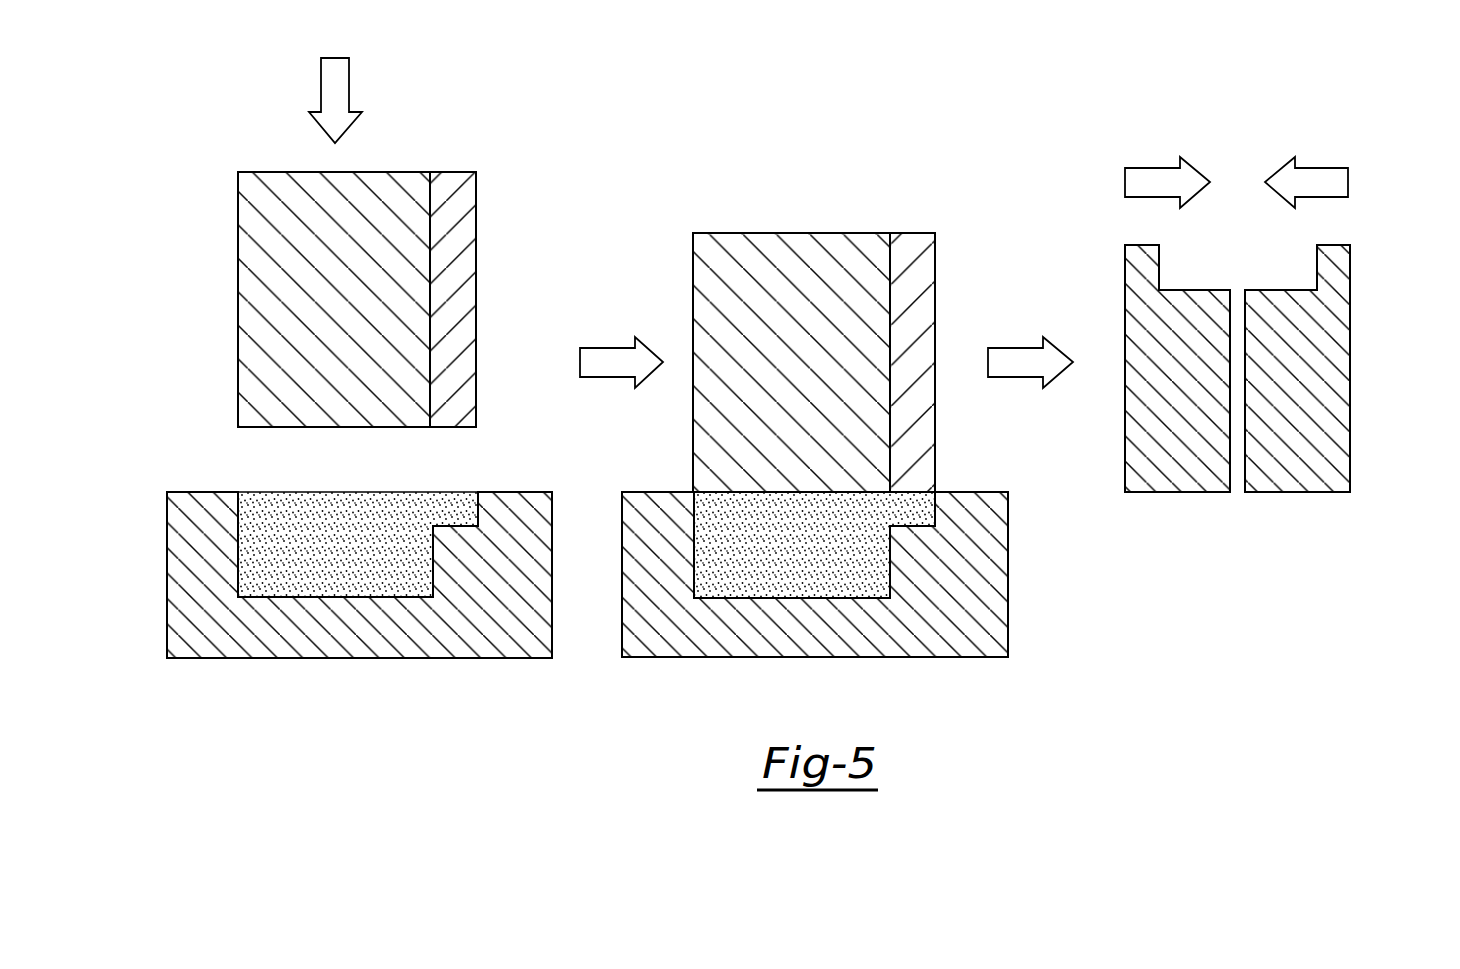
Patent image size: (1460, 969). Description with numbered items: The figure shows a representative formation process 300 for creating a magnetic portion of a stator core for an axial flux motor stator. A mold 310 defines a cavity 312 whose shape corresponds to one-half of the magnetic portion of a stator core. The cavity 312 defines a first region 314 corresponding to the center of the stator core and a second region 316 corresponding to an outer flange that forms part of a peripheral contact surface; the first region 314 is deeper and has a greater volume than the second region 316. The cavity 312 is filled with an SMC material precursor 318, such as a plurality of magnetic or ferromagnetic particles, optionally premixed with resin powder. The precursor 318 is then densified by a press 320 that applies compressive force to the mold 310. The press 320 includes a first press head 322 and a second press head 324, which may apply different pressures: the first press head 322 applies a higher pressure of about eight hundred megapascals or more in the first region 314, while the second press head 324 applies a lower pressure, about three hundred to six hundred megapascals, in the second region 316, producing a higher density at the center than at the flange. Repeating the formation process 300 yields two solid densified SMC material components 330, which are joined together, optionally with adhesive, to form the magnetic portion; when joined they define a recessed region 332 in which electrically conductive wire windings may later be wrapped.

The formation process 300 is at (243, 126).
The mold 310 is at (167, 535).
The cavity 312 is at (240, 545).
The first region 314 is at (290, 597).
The second region 316 is at (470, 526).
The SMC material precursor 318 is at (425, 492).
The press 320 is at (403, 172).
The first press head 322 is at (255, 283).
The second press head 324 is at (467, 238).
The solid densified SMC material components 330 is at (1125, 265).
The recessed region 332 is at (1240, 282).